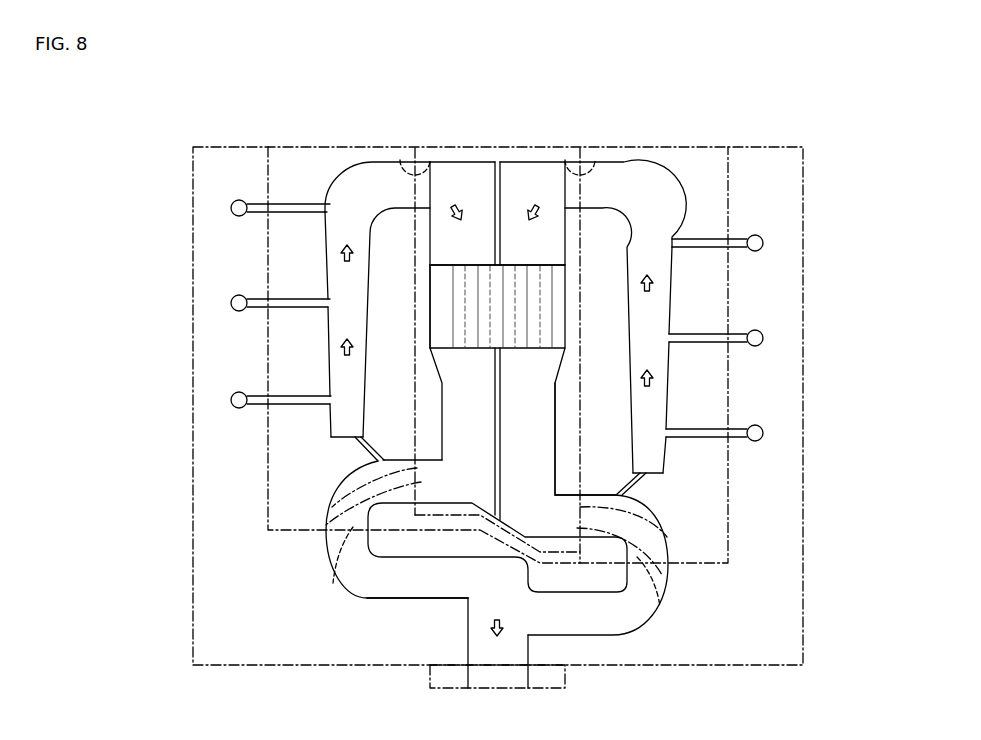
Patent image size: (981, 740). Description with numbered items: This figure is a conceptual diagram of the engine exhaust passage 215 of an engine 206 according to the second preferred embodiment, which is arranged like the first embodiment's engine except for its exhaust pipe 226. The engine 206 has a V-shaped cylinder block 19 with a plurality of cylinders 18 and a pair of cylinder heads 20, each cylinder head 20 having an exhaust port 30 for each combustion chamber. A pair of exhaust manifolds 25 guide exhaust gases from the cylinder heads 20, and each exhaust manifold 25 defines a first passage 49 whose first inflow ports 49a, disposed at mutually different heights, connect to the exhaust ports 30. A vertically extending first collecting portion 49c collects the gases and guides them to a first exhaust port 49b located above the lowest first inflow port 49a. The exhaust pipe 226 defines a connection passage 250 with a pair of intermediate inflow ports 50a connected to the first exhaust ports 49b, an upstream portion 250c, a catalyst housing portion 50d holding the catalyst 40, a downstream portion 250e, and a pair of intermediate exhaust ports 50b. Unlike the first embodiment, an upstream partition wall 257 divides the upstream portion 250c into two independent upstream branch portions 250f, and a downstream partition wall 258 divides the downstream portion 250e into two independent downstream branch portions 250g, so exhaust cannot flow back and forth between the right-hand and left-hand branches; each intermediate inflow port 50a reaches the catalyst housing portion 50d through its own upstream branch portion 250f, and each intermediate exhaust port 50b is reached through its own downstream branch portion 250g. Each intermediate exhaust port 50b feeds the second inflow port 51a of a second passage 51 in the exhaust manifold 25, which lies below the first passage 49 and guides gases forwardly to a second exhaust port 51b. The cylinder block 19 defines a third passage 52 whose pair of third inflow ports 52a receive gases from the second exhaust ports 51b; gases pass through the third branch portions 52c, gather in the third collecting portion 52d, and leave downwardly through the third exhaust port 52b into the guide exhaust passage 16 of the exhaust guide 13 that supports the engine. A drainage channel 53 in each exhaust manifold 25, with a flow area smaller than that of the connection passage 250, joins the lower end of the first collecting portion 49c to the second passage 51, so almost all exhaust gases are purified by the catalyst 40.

The exhaust guide 13 is at (566, 686).
The guide exhaust passage 16 is at (466, 684).
The cylinder 18 is at (239, 199).
The cylinder block 19 is at (803, 178).
The cylinder head 20 is at (345, 148).
The exhaust manifold 25 is at (444, 277).
The exhaust port 30 is at (300, 213).
The catalyst 40 is at (430, 330).
The first passage 49 is at (364, 166).
The first inflow port 49a is at (322, 204).
The first exhaust port 49b is at (416, 146).
The first collecting portion 49c is at (378, 207).
The intermediate inflow port 50a is at (401, 159).
The intermediate exhaust port 50b is at (345, 487).
The catalyst housing portion 50d is at (518, 316).
The second passage 51 is at (325, 522).
The second inflow port 51a is at (332, 511).
The second exhaust port 51b is at (333, 548).
The third passage 52 is at (340, 588).
The third inflow port 52a is at (332, 565).
The third exhaust port 52b is at (450, 670).
The third branch portion 52c is at (438, 591).
The third collecting portion 52d is at (513, 645).
The drainage channel 53 is at (358, 448).
The engine 206 is at (870, 127).
The engine exhaust passage 215 is at (400, 605).
The exhaust pipe 226 is at (470, 141).
The connection passage 250 is at (508, 163).
The upstream portion 250c is at (492, 256).
The downstream portion 250e is at (492, 371).
The upstream branch portion 250f is at (490, 194).
The downstream branch portion 250g is at (486, 490).
The upstream partition wall 257 is at (502, 247).
The downstream partition wall 258 is at (502, 446).